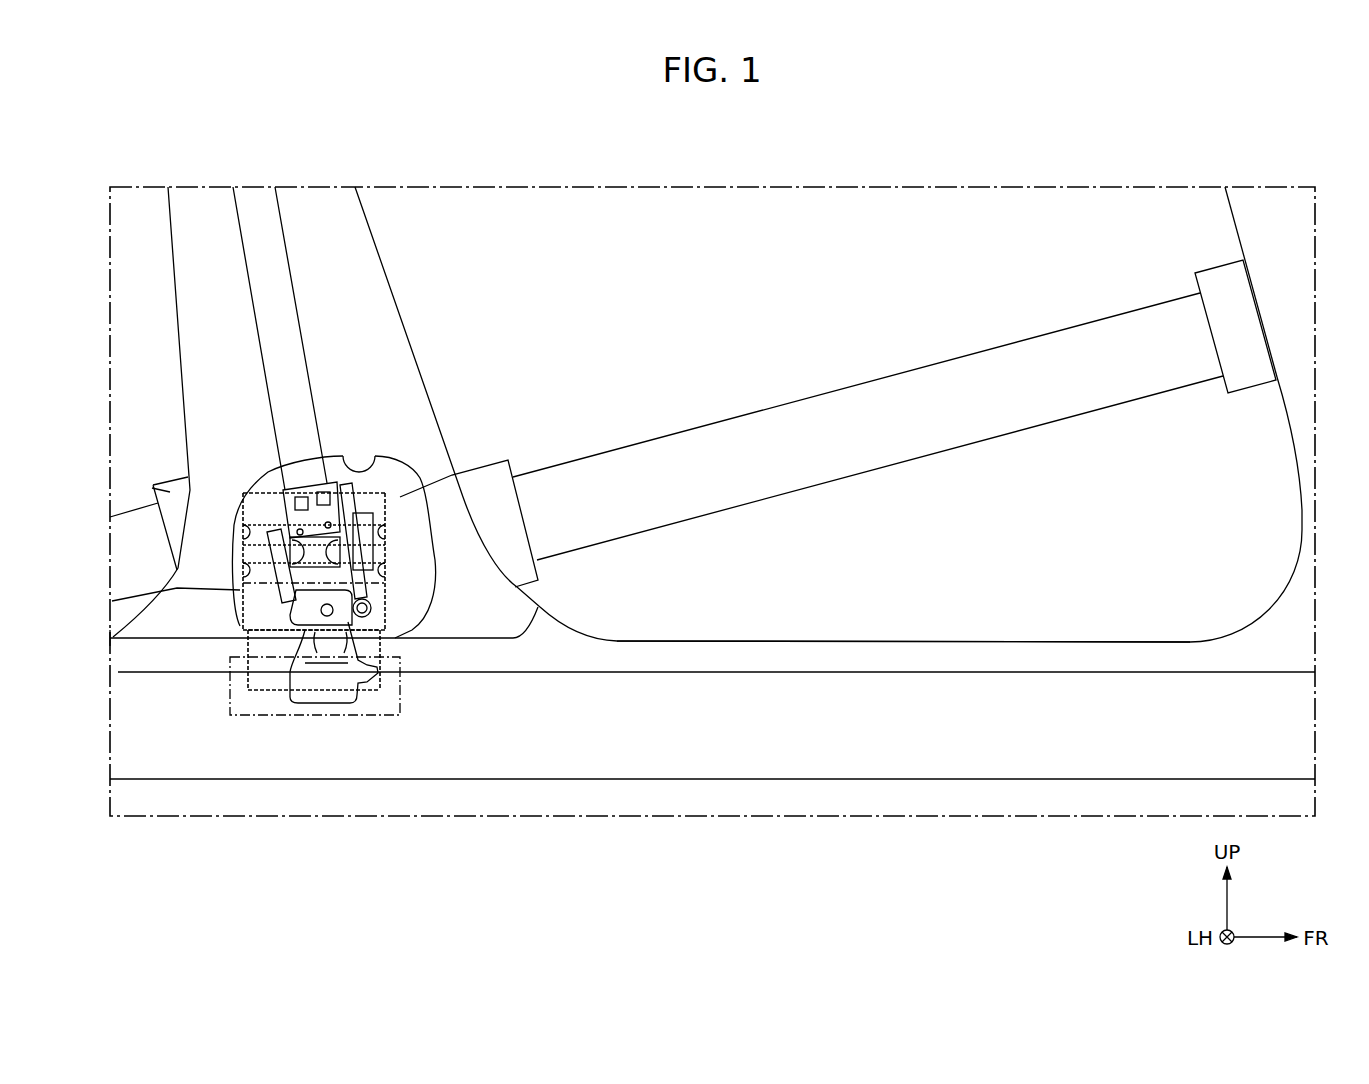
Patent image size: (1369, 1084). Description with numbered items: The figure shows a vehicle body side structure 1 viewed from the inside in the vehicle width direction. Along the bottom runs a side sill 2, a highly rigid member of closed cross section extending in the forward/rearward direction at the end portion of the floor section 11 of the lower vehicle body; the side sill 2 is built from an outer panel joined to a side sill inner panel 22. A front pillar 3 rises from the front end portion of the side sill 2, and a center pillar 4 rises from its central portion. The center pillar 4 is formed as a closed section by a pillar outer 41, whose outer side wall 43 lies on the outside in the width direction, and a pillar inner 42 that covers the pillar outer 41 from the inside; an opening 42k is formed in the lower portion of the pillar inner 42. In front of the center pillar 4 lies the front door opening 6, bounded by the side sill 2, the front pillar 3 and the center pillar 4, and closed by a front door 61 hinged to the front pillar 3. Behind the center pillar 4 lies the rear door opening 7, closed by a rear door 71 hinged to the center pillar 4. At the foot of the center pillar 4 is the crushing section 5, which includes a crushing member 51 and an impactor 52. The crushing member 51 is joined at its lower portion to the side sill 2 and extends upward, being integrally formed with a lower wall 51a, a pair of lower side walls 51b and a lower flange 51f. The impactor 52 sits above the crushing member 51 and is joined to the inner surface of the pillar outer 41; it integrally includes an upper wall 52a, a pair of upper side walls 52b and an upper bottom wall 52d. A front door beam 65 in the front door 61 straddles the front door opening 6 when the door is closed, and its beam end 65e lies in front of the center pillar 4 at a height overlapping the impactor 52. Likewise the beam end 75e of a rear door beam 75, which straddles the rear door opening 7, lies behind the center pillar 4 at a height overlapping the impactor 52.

The vehicle body side structure 1 is at (918, 267).
The side sill 2 is at (712, 782).
The front pillar 3 is at (1230, 230).
The center pillar 4 is at (293, 397).
The pillar outer 41 is at (263, 513).
The outer side wall 43 is at (187, 350).
The pillar inner 42 is at (441, 397).
The opening 42k is at (373, 468).
The crushing section 5 is at (351, 553).
The crushing member 51 is at (418, 669).
The lower wall 51a is at (356, 699).
The lower side walls 51b is at (247, 647).
The lower flange 51f is at (367, 707).
The impactor 52 is at (332, 484).
The upper wall 52a is at (263, 512).
The upper side walls 52b is at (243, 512).
The upper bottom wall 52d is at (258, 600).
The front door opening 6 is at (950, 634).
The front door 61 is at (1170, 640).
The front door beam 65 is at (838, 423).
The beam end 65e is at (517, 513).
The rear door opening 7 is at (291, 503).
The rear door 71 is at (146, 616).
The rear door beam 75 is at (116, 507).
The beam end 75e is at (152, 488).
The floor section 11 is at (980, 778).
The side sill inner panel 22 is at (907, 753).